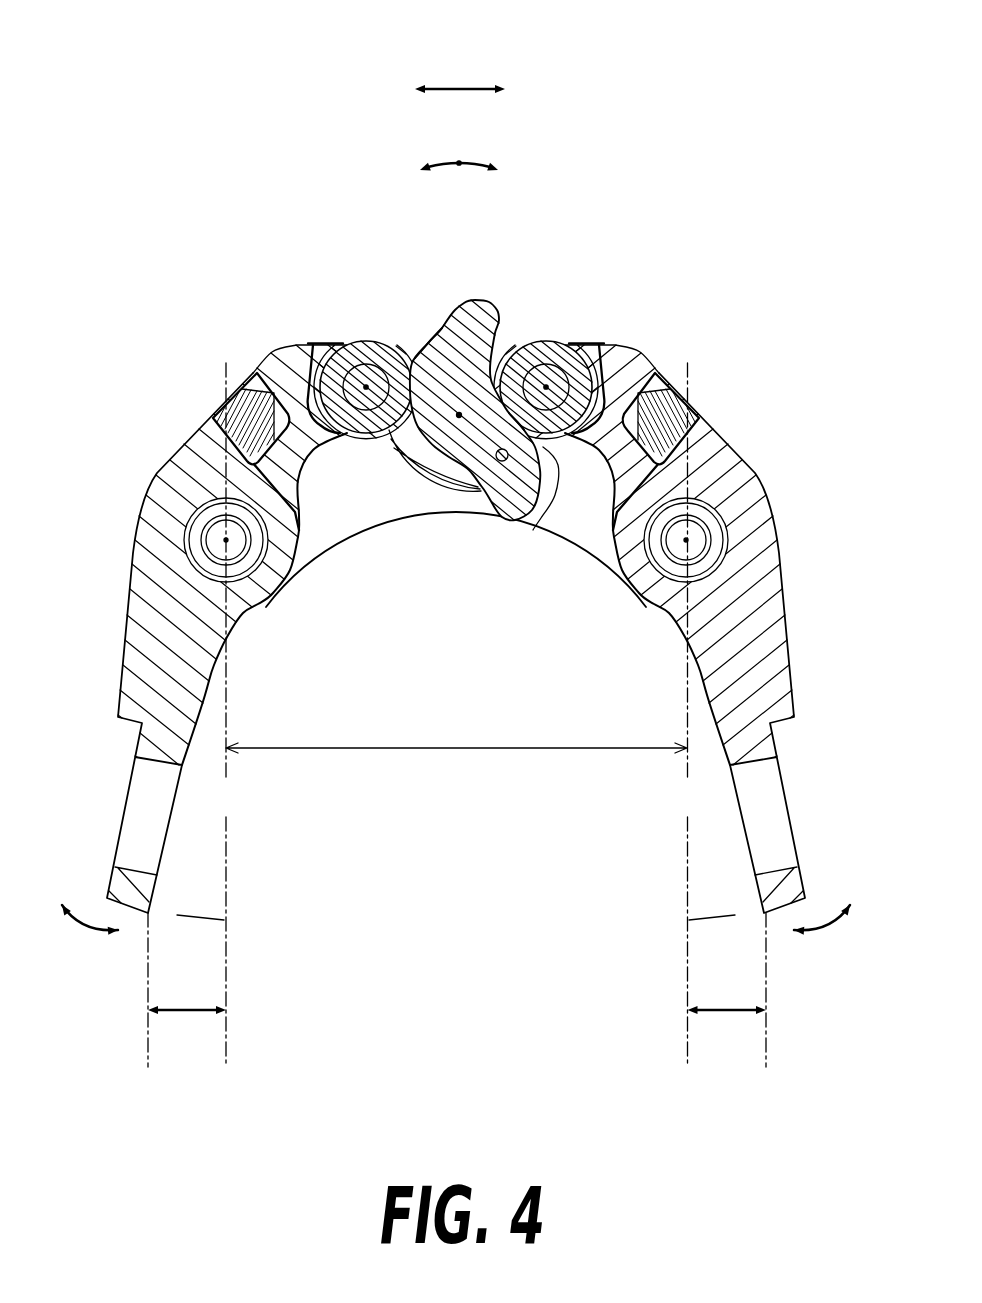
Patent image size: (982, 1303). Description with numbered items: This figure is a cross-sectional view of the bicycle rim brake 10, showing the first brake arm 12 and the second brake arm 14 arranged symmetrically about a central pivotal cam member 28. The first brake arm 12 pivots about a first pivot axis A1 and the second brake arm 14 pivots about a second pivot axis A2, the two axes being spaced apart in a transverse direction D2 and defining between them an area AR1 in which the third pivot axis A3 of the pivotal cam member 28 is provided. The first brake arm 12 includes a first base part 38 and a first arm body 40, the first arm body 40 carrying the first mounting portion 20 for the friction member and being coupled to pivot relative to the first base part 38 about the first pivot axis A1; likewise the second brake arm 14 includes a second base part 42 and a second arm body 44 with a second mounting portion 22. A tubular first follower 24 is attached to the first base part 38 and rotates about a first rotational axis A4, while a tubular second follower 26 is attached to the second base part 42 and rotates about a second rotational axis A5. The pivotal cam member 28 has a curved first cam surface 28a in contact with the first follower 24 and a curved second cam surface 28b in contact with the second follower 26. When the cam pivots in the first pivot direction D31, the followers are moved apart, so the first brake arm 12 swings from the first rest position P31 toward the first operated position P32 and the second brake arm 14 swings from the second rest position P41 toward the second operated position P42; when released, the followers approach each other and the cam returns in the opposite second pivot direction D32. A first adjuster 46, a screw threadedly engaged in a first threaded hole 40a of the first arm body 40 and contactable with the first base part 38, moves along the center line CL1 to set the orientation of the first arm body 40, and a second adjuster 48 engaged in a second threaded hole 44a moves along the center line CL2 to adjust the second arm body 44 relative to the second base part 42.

The bicycle rim brake 10 is at (653, 199).
The first brake arm 12 is at (157, 469).
The second brake arm 14 is at (775, 469).
The first mounting portion 20 is at (125, 875).
The second mounting portion 22 is at (788, 875).
The first follower 24 is at (366, 385).
The second follower 26 is at (546, 385).
The pivotal cam member 28 is at (478, 279).
The first cam surface 28a is at (428, 344).
The second cam surface 28b is at (535, 452).
The first base part 38 is at (290, 363).
The first arm body 40 is at (150, 592).
The first threaded hole 40a is at (297, 503).
The second base part 42 is at (625, 365).
The second arm body 44 is at (765, 592).
The second threaded hole 44a is at (610, 525).
The first adjuster 46 is at (222, 413).
The second adjuster 48 is at (690, 413).
The first pivot axis A1 is at (226, 540).
The second pivot axis A2 is at (686, 540).
The third pivot axis A3 is at (459, 415).
The first rotational axis A4 is at (347, 345).
The second rotational axis A5 is at (565, 345).
The center line of the first threaded hole CL1 is at (210, 393).
The center line of the second threaded hole CL2 is at (702, 393).
The transverse direction D2 is at (455, 88).
The first pivot direction D31 is at (446, 165).
The second pivot direction D32 is at (464, 165).
The area AR1 is at (456, 735).
The first rest position P31 is at (148, 1022).
The first operated position P32 is at (227, 1022).
The second rest position P41 is at (766, 1022).
The second operated position P42 is at (687, 1022).